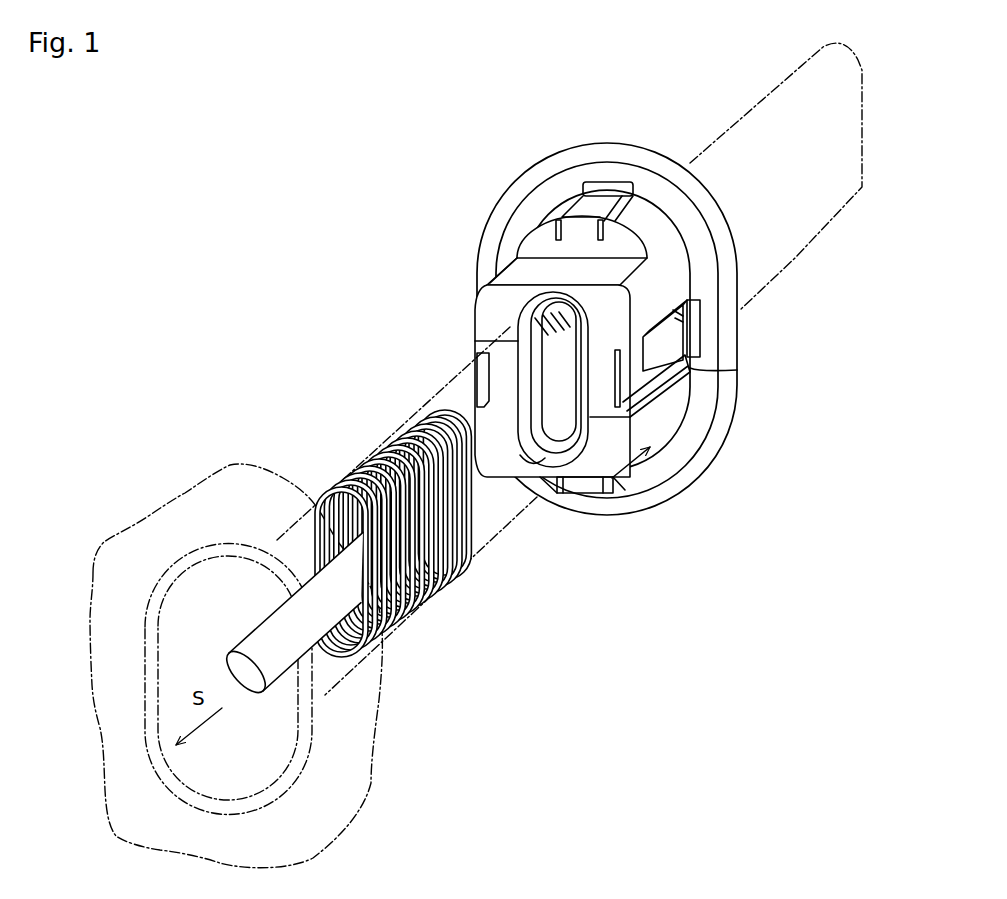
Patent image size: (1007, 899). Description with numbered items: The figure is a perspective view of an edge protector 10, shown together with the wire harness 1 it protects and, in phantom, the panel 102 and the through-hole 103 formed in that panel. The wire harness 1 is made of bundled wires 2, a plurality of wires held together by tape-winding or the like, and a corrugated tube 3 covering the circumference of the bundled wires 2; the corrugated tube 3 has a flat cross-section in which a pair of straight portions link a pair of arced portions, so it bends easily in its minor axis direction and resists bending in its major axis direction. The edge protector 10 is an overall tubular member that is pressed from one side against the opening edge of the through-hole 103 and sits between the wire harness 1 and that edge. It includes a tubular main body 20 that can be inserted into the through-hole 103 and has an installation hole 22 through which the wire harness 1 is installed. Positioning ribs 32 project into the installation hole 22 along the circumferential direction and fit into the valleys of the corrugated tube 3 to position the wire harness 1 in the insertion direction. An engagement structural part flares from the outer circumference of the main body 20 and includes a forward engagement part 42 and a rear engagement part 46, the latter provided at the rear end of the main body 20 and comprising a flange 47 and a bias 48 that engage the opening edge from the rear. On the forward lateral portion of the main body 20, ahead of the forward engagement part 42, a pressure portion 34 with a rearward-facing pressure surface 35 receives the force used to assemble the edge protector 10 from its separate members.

The wire harness 1 is at (803, 250).
The bundled wires 2 is at (258, 622).
The corrugated tube 3 is at (427, 593).
The edge protector 10 is at (584, 341).
The main body 20 is at (591, 341).
The installation hole 22 is at (537, 457).
The positioning rib 32 is at (525, 440).
The pressure portion 34 is at (508, 277).
The pressure surface 35 is at (520, 265).
The forward engagement part 42 is at (583, 185).
The rear engagement part 46 is at (740, 400).
The flange 47 is at (696, 433).
The bias 48 is at (690, 473).
The panel 102 is at (122, 533).
The through-hole 103 is at (150, 636).